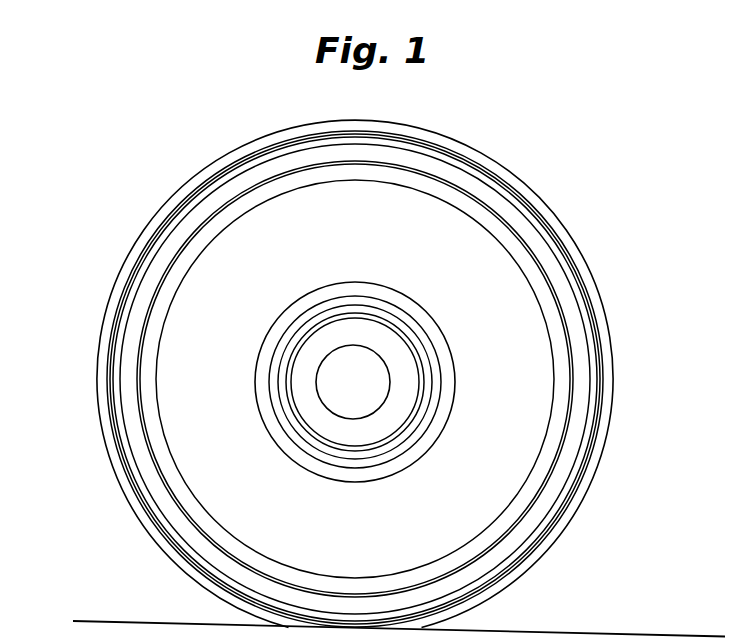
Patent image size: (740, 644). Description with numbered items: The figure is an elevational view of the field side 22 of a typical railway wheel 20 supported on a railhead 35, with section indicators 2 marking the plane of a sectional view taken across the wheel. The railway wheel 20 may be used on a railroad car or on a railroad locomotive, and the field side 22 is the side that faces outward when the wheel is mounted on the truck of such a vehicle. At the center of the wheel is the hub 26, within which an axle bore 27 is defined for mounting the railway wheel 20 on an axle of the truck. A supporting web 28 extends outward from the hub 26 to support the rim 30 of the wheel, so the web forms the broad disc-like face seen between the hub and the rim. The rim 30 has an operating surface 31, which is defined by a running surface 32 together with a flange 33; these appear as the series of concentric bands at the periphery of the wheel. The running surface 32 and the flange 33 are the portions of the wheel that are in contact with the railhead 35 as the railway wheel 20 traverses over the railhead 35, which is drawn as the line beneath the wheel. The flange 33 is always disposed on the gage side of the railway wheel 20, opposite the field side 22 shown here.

The railway wheel 20 is at (293, 110).
The field side 22 is at (340, 549).
The hub 26 is at (293, 383).
The axle bore 27 is at (316, 385).
The supporting web 28 is at (522, 455).
The rim 30 is at (577, 447).
The operating surface 31 is at (600, 425).
The running surface 32 is at (515, 565).
The flange 33 is at (557, 543).
The railhead 35 is at (582, 632).
The section line 2- 2 is at (80, 373).